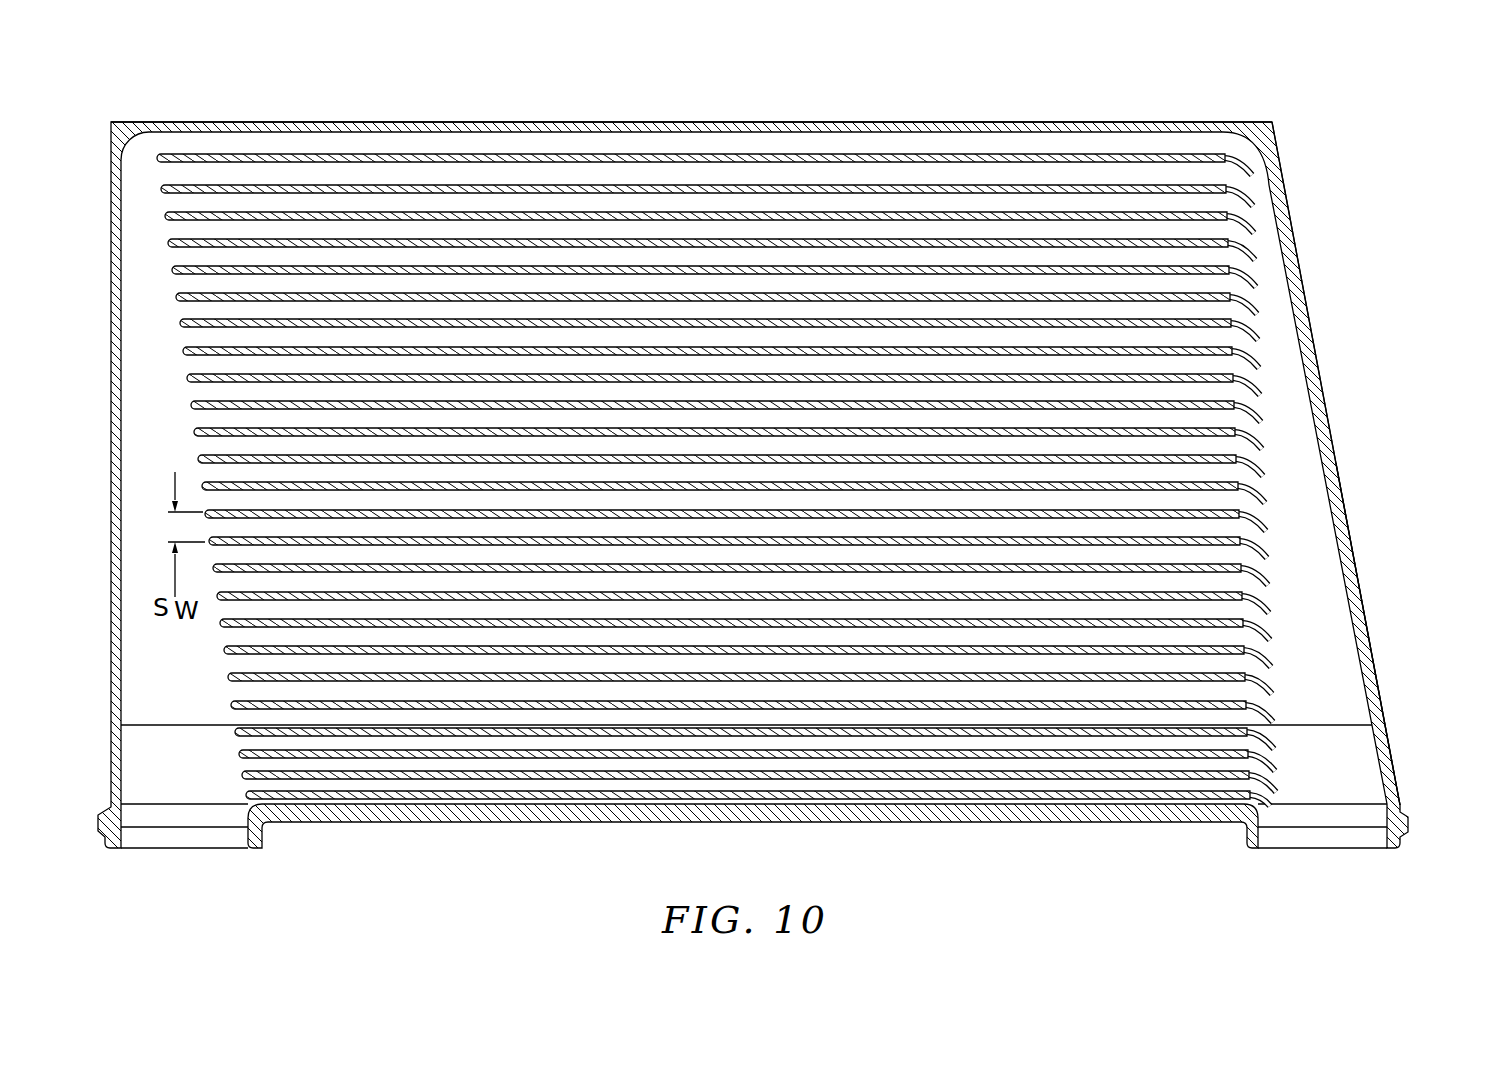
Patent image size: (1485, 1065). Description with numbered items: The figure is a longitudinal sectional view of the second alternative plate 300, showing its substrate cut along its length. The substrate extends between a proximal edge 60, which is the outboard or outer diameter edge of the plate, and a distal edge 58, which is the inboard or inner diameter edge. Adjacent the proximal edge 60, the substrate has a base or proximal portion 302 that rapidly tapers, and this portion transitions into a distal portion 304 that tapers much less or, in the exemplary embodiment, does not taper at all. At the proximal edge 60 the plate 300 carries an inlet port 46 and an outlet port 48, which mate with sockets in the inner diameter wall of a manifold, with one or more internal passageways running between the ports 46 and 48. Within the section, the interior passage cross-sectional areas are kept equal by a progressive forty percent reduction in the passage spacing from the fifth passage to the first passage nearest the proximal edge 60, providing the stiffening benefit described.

The plate 300 is at (785, 461).
The distal edge 58 is at (930, 122).
The distal portion 304 is at (1357, 470).
The base/proximal portion 302 is at (1398, 765).
The proximal edge 60 is at (1061, 823).
The outlet port 48 is at (187, 858).
The inlet port 46 is at (1323, 853).